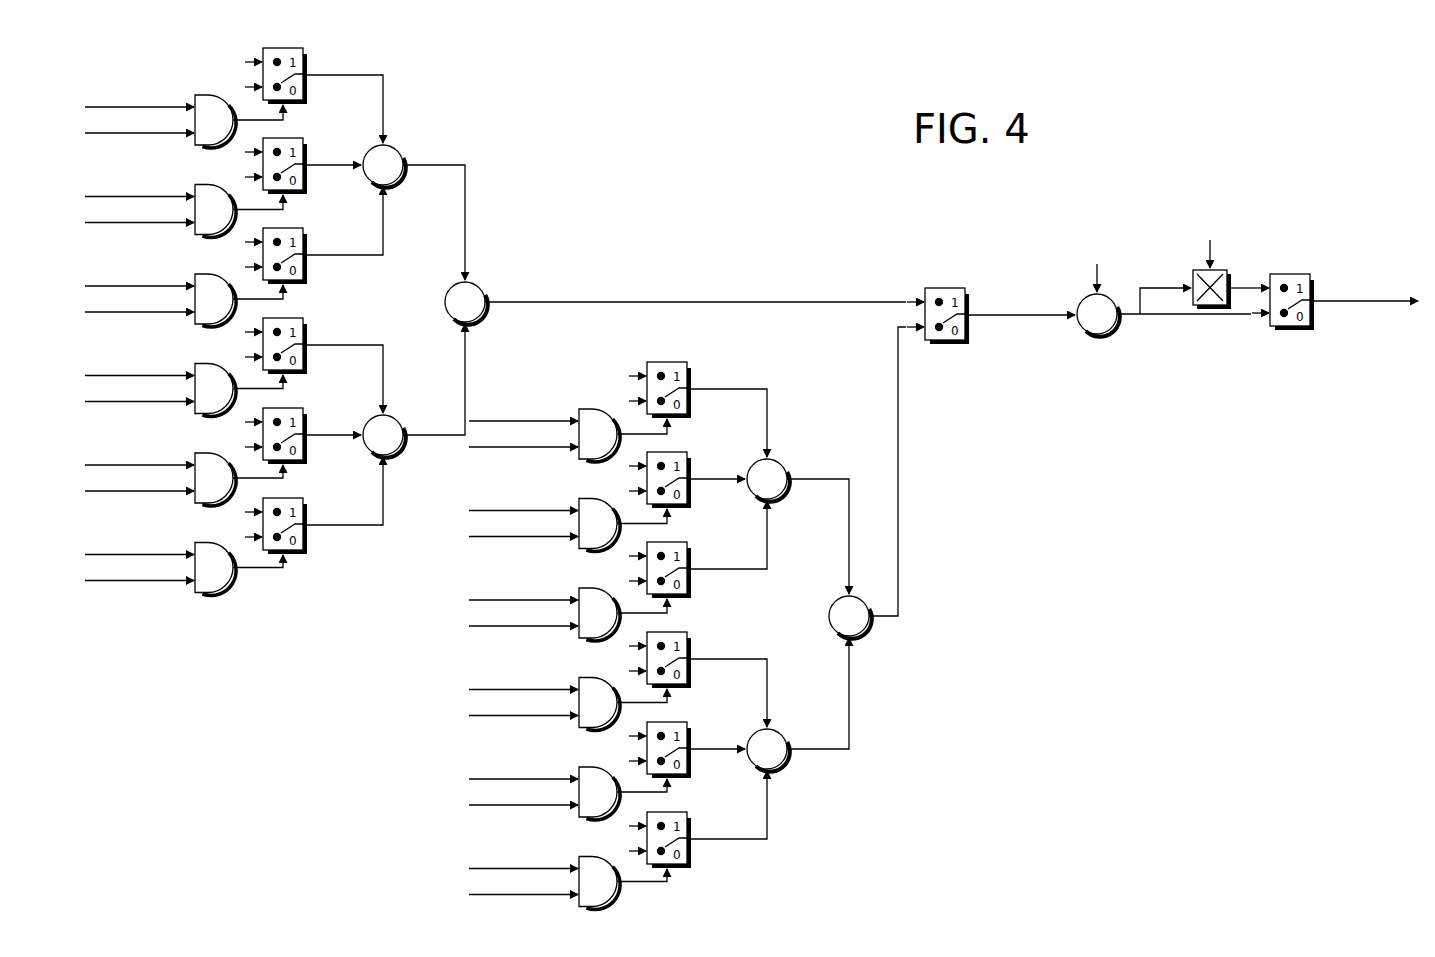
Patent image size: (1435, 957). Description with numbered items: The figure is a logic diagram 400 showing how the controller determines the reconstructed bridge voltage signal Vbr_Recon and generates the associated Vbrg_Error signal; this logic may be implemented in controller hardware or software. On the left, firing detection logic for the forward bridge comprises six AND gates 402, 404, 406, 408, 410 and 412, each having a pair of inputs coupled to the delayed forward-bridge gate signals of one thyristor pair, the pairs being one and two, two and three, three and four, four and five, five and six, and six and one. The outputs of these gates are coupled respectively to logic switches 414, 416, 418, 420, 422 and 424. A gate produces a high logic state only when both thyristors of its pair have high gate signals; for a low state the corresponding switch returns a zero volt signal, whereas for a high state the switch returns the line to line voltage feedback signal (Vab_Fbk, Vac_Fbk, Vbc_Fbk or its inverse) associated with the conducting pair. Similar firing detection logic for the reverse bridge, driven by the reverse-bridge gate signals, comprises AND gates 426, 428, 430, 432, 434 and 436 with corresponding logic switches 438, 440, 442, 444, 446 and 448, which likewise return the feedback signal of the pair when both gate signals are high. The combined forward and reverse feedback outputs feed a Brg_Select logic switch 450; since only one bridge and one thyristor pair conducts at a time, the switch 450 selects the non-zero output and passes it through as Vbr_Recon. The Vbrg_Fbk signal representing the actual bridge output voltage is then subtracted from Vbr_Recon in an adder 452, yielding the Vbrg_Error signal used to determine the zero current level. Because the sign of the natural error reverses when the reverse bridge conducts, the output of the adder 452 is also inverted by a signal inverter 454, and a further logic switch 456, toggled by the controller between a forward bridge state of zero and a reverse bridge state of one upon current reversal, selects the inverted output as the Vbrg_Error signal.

The logic diagram 400 is at (805, 212).
The AND gate 402 is at (215, 113).
The AND gate 404 is at (215, 202).
The AND gate 406 is at (215, 292).
The AND gate 408 is at (215, 382).
The AND gate 410 is at (215, 471).
The AND gate 412 is at (216, 568).
The logic switch 414 is at (301, 63).
The logic switch 416 is at (301, 153).
The logic switch 418 is at (301, 243).
The logic switch 420 is at (301, 333).
The logic switch 422 is at (301, 423).
The logic switch 424 is at (301, 513).
The AND gate 426 is at (568, 418).
The AND gate 428 is at (568, 508).
The AND gate 430 is at (568, 597).
The AND gate 432 is at (568, 687).
The AND gate 434 is at (568, 776).
The AND gate 436 is at (592, 889).
The logic switch 438 is at (669, 397).
The logic switch 440 is at (658, 466).
The logic switch 442 is at (669, 548).
The logic switch 444 is at (667, 667).
The logic switch 446 is at (656, 736).
The logic switch 448 is at (667, 818).
The Brg_Select logic switch 450 is at (934, 287).
The adder 452 is at (1095, 335).
The signal inverter 454 is at (1180, 270).
The logic switch 456 is at (1323, 273).